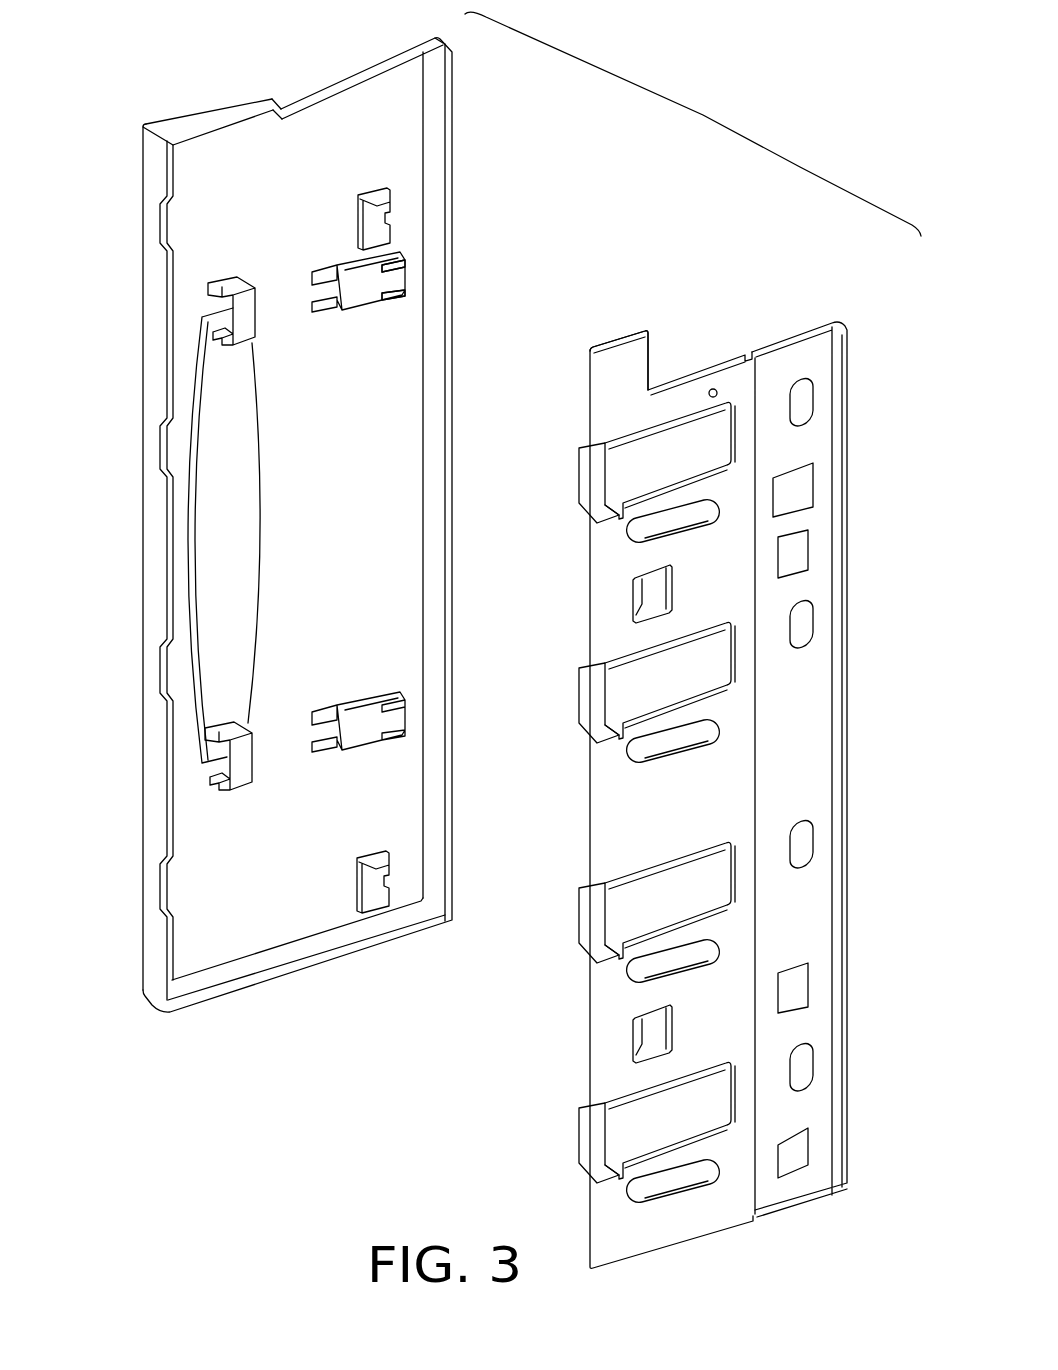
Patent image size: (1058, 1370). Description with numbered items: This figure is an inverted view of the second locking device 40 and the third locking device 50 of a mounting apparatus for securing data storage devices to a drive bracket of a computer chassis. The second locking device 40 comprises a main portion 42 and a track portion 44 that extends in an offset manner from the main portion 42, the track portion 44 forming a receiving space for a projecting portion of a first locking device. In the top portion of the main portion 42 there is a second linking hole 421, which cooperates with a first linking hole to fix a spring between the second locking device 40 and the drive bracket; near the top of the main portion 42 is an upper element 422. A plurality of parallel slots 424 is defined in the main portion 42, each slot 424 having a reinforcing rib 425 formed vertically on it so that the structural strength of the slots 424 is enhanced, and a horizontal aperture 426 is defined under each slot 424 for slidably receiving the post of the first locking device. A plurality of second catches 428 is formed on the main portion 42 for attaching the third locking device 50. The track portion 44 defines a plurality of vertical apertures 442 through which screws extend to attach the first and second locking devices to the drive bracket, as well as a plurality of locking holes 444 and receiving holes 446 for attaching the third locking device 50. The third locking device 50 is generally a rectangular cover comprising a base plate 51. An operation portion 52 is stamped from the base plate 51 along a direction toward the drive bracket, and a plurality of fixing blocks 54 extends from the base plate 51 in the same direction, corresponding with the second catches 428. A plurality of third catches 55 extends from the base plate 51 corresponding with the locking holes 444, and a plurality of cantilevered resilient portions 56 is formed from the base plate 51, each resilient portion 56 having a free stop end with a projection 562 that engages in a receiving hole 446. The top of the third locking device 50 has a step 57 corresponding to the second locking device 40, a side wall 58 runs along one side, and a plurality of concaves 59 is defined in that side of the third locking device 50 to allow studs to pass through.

The second locking device 40 is at (852, 316).
The main portion 42 is at (688, 393).
The track portion 44 is at (798, 353).
The second linking hole 421 is at (717, 396).
The tab 422 is at (627, 355).
The slot 424 is at (641, 467).
The reinforcing rib 425 is at (592, 475).
The horizontal aperture 426 is at (673, 522).
The second catch 428 is at (637, 578).
The vertical aperture 442 is at (800, 397).
The locking hole 444 is at (790, 492).
The receiving hole 446 is at (795, 552).
The third locking device 50 is at (208, 85).
The base plate 51 is at (227, 908).
The operation portion 52 is at (237, 470).
The fixing block 54 is at (242, 317).
The third catch 55 is at (375, 227).
The resilient portion 56 is at (362, 290).
The projection 562 is at (402, 266).
The step 57 is at (253, 107).
The side wall 58 is at (162, 327).
The concave 59 is at (165, 218).